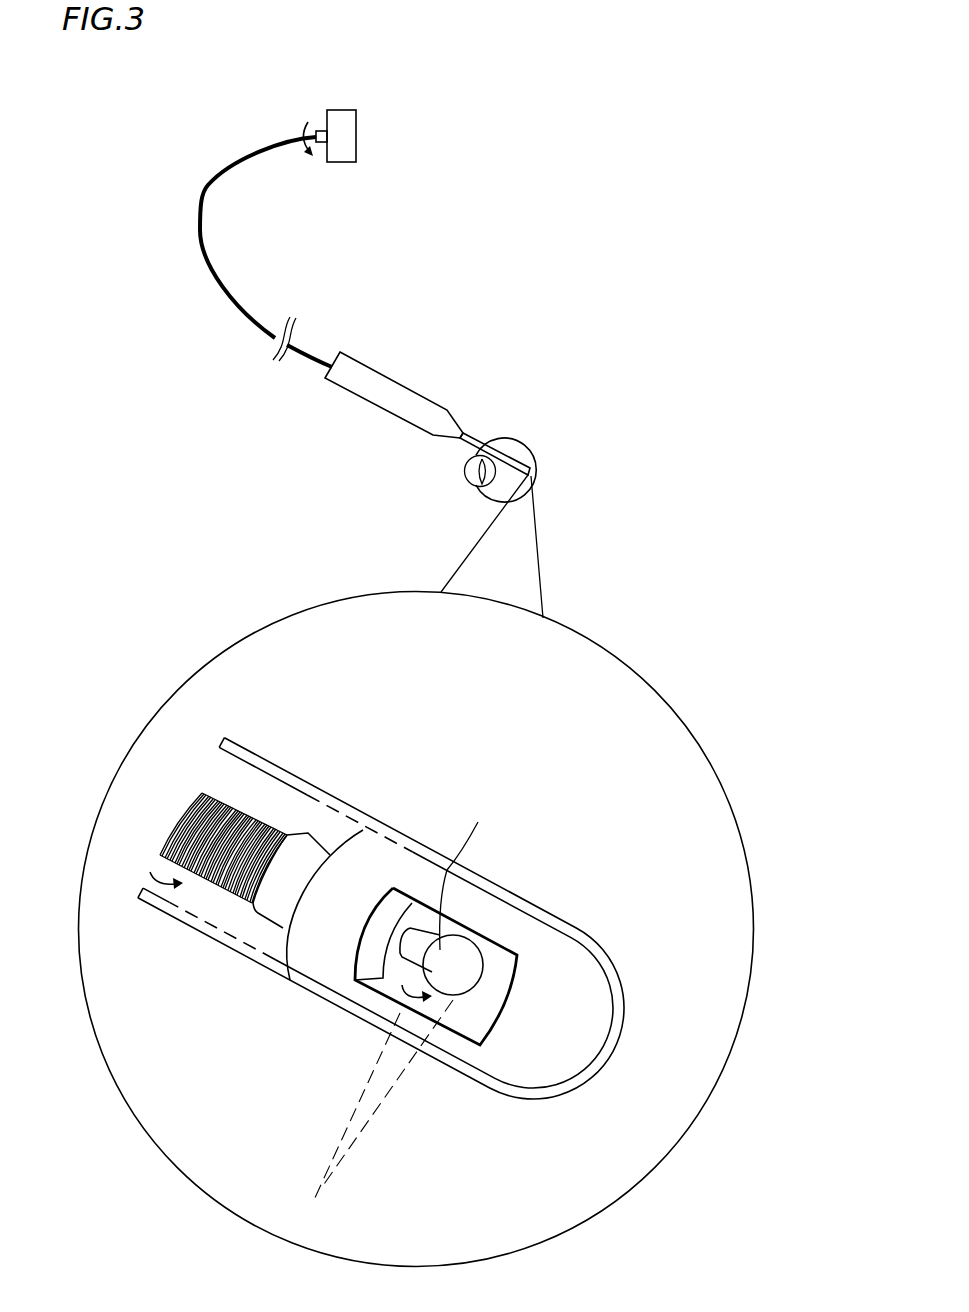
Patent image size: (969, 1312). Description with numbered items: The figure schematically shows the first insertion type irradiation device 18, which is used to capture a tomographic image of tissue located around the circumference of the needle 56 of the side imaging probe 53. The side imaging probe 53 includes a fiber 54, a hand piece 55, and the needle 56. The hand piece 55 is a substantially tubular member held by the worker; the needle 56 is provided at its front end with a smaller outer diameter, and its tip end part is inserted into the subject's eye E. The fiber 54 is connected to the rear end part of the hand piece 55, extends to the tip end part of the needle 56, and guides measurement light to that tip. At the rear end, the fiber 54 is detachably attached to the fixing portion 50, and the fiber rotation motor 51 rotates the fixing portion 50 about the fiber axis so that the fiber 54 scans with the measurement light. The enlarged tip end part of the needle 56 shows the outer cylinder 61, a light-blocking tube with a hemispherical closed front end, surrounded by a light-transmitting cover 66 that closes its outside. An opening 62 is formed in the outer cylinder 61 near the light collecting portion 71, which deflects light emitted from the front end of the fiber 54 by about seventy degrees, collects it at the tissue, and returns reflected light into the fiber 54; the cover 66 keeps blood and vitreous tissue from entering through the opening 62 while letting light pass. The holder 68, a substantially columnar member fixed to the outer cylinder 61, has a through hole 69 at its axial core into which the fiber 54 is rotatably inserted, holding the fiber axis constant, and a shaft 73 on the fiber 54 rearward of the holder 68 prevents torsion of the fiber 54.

The first insertion type irradiation device 18 is at (584, 183).
The fixing portion 50 is at (322, 128).
The fiber rotation motor 51 is at (357, 151).
The side imaging probe 53 is at (418, 352).
The fiber 54 is at (240, 303).
The hand piece 55 is at (352, 356).
The needle 56 is at (477, 434).
The outer cylinder 61 is at (548, 1047).
The opening 62 is at (501, 953).
The cover 66 is at (590, 1062).
The holder 68 is at (395, 907).
The through hole 69 is at (376, 977).
The light collecting portion 71 is at (480, 938).
The shaft 73 is at (245, 810).
The subject's eye E is at (501, 459).